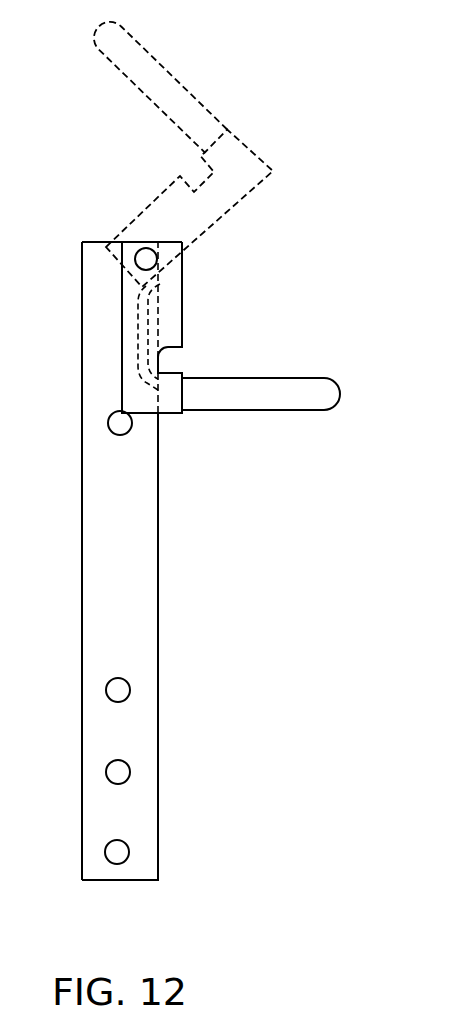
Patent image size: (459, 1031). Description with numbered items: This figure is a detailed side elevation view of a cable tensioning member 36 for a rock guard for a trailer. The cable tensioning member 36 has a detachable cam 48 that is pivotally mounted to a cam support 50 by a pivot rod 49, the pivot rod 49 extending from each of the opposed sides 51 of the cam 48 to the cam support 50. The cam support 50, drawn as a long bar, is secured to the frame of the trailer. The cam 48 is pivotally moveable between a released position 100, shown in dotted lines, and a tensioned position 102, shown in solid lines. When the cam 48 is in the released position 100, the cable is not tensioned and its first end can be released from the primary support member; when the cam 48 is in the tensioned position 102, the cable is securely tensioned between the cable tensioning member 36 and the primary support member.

The cable tensioning member 36 is at (316, 213).
The cam 48 is at (182, 310).
The pivot rod 49 is at (146, 258).
The cam support 50 is at (159, 564).
The opposed sides 51 is at (98, 300).
The released position 100 is at (184, 89).
The tensioned position 102 is at (279, 378).